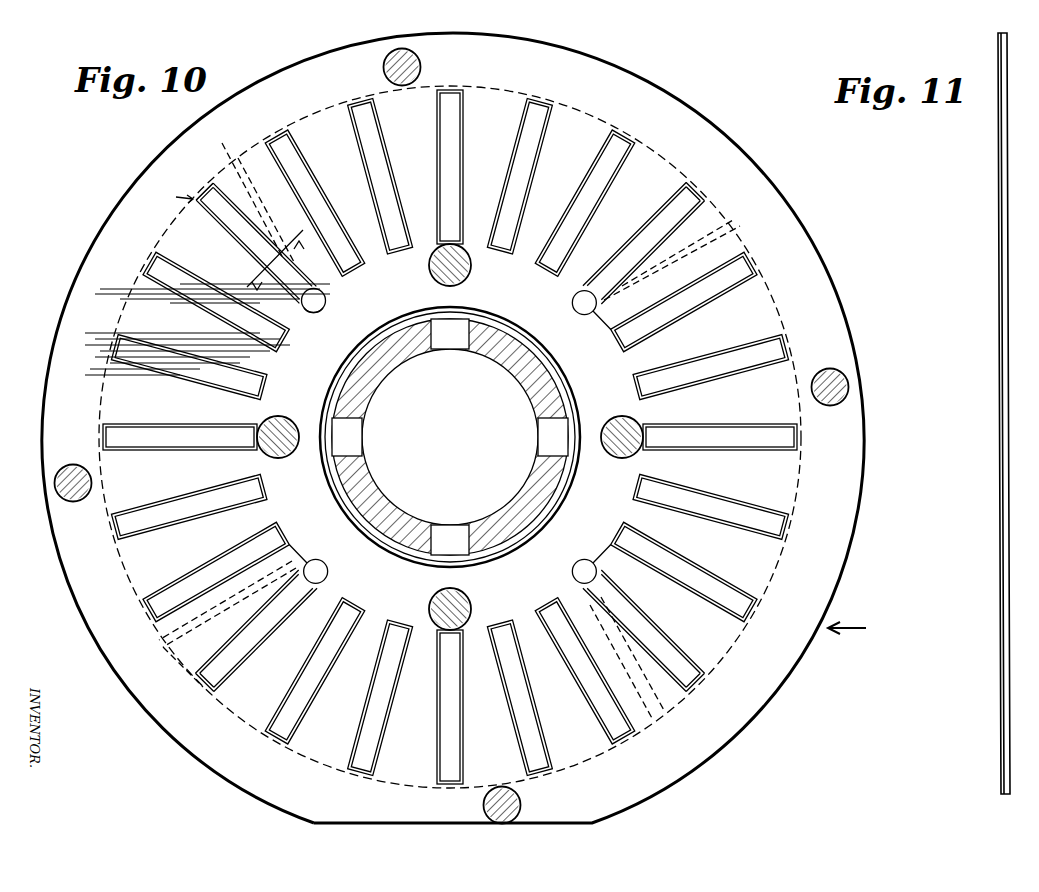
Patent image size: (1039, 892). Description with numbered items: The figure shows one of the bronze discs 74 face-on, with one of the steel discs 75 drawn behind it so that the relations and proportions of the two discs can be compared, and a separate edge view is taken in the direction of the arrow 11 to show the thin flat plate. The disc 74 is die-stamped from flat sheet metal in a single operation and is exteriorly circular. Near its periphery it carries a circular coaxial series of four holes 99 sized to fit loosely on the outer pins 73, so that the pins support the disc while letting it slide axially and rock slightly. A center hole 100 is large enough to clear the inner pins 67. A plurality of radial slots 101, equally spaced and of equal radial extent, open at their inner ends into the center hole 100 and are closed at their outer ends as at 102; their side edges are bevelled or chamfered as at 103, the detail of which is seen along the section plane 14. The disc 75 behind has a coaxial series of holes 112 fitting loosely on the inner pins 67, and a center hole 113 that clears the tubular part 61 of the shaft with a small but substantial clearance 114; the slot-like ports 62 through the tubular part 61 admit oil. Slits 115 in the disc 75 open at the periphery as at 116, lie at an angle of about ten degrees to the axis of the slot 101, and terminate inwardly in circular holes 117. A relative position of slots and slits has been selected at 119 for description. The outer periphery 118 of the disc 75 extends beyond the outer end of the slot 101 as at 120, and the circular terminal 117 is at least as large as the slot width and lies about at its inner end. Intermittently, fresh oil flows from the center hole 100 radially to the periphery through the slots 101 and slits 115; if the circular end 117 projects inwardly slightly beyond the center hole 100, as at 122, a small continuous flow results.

The arrow 11 is at (861, 628).
The section plane 14 is at (290, 275).
The tubular part of the shaft 61 is at (394, 510).
The slot-like ports 62 is at (453, 339).
The inner pins 67 is at (469, 265).
The outer pins 73 is at (411, 66).
The disc 74 is at (770, 700).
The disc 75 is at (760, 606).
The holes 99 is at (416, 58).
The center hole 100 is at (270, 360).
The radial slots 101 is at (252, 242).
The closed outer end of slot 102 is at (203, 190).
The chamfered side edges 103 is at (221, 200).
The holes 112 is at (427, 272).
The center hole 113 is at (357, 530).
The clearance 114 is at (373, 333).
The slits 115 is at (256, 210).
The open outer end of slit 116 is at (222, 155).
The circular holes 117 is at (325, 299).
The outer periphery of disc 118 is at (273, 131).
The relative position of slots and slits 119 is at (187, 150).
The extension beyond slot end 120 is at (171, 200).
The inward projection of slit end 122 is at (316, 312).